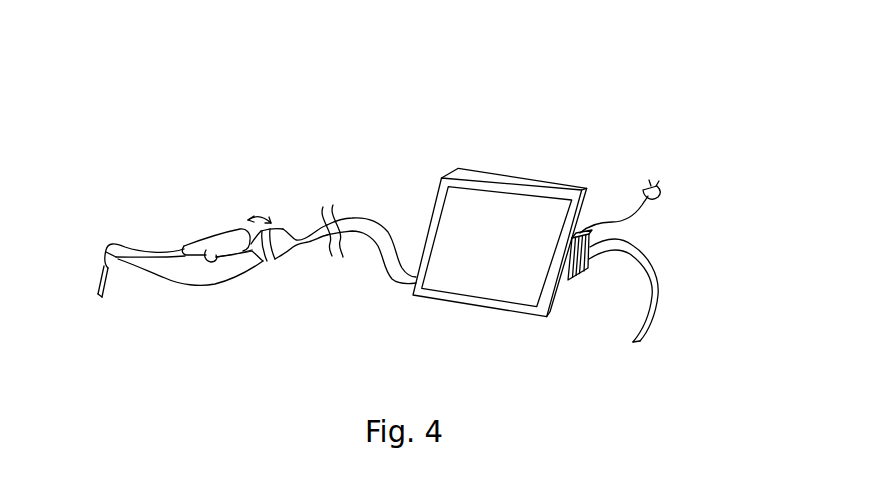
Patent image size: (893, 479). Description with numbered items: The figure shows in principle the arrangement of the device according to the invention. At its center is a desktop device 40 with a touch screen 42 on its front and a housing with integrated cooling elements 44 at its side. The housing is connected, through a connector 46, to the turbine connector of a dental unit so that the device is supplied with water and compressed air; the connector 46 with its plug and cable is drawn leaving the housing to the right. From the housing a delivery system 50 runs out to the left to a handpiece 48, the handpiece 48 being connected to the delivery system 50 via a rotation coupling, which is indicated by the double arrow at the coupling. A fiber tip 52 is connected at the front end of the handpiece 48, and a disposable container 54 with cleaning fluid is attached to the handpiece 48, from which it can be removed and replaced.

The desktop device 40 is at (507, 170).
The touch screen 42 is at (449, 271).
The integrated cooling elements 44 is at (572, 282).
The connector 46 is at (657, 267).
The handpiece 48 is at (137, 225).
The delivery system 50 is at (348, 218).
The fiber tip 52 is at (102, 290).
The disposable container 54 is at (215, 261).